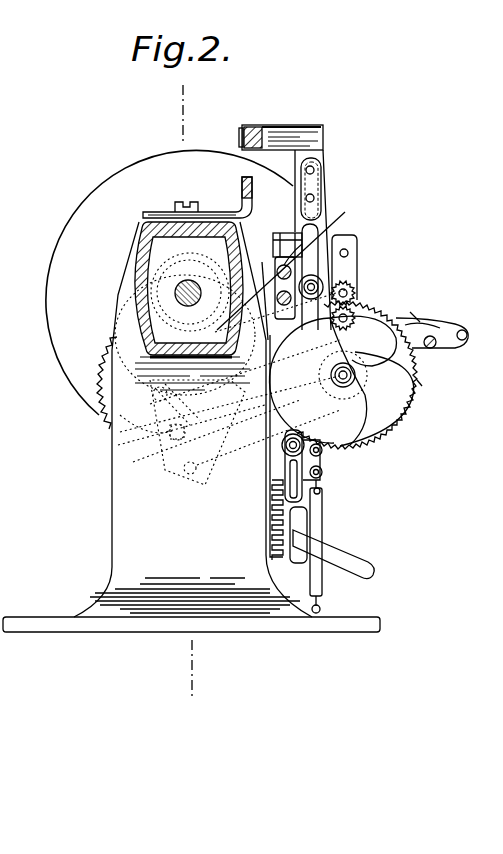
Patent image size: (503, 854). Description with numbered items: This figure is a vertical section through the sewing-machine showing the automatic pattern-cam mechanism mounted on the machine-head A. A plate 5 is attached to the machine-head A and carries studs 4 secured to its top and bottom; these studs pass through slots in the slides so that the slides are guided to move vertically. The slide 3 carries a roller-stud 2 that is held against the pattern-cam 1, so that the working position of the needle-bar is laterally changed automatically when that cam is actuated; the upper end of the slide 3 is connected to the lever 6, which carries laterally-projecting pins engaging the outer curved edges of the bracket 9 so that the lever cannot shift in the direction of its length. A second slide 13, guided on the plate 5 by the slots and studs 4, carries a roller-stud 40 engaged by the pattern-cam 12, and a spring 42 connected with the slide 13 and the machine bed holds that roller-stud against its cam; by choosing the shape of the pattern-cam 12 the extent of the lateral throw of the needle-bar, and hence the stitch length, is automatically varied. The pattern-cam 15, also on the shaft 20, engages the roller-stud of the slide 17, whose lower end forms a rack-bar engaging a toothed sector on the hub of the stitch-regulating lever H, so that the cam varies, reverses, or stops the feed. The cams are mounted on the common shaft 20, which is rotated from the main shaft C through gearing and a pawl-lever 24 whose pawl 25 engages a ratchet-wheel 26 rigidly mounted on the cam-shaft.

The machine-head A is at (140, 261).
The main shaft C is at (188, 283).
The bracket 9 is at (215, 212).
The lever 6 is at (248, 125).
The slide 3 is at (313, 197).
The slide 13 is at (300, 246).
The plate 5 is at (279, 286).
The roller-stud 2 is at (348, 279).
The studs 4 is at (322, 284).
The roller-stud 40 is at (350, 316).
The pattern-cam 15 is at (404, 388).
The pattern-cam 12 is at (353, 425).
The pattern-cam 1 is at (366, 330).
The shaft 20 is at (330, 377).
The pawl 25 is at (410, 326).
The pawl-lever 24 is at (434, 346).
The ratchet-wheel 26 is at (420, 385).
The slide 17 is at (286, 512).
The spring 42 is at (319, 530).
The stitch-regulating lever H is at (352, 562).